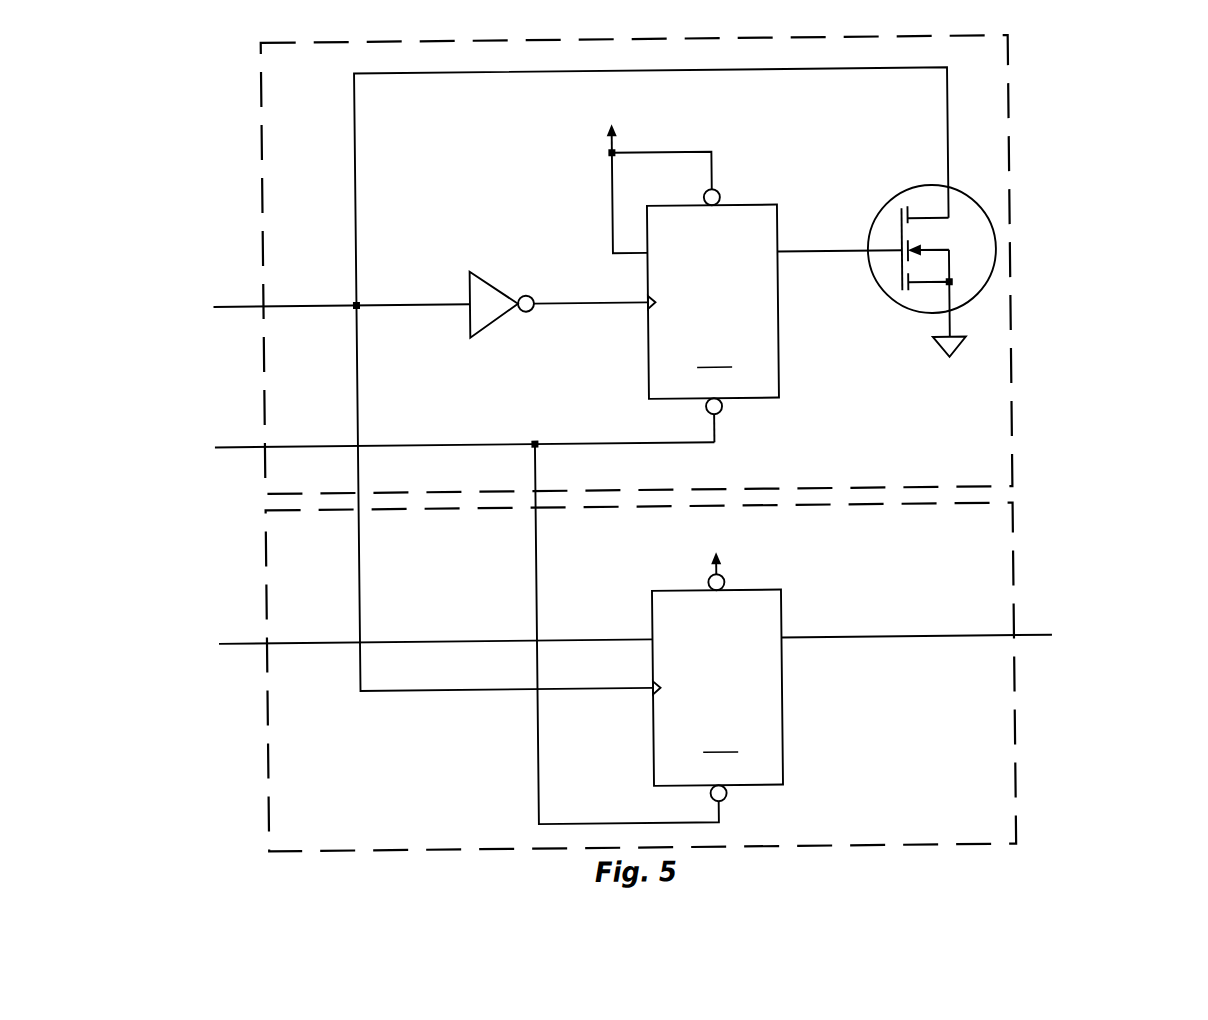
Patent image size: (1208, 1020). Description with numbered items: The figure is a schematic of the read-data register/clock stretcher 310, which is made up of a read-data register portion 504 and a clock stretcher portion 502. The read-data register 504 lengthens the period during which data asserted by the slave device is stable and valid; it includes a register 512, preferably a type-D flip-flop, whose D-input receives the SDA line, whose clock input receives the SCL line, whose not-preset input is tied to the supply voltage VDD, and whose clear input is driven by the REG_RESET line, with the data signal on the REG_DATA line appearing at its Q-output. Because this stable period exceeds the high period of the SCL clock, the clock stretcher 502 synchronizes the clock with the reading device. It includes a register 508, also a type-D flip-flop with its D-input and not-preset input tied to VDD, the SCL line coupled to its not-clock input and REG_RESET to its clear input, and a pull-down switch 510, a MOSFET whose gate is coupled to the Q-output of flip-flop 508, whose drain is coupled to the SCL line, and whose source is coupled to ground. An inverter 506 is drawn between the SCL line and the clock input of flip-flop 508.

The read-data register/clock stretcher 310 is at (1126, 335).
The clock stretcher portion 502 is at (1013, 394).
The read-data register portion 504 is at (1013, 539).
The inverter 506 is at (499, 287).
The register 508 is at (697, 312).
The pull-down switch 510 is at (990, 264).
The register 512 is at (697, 698).